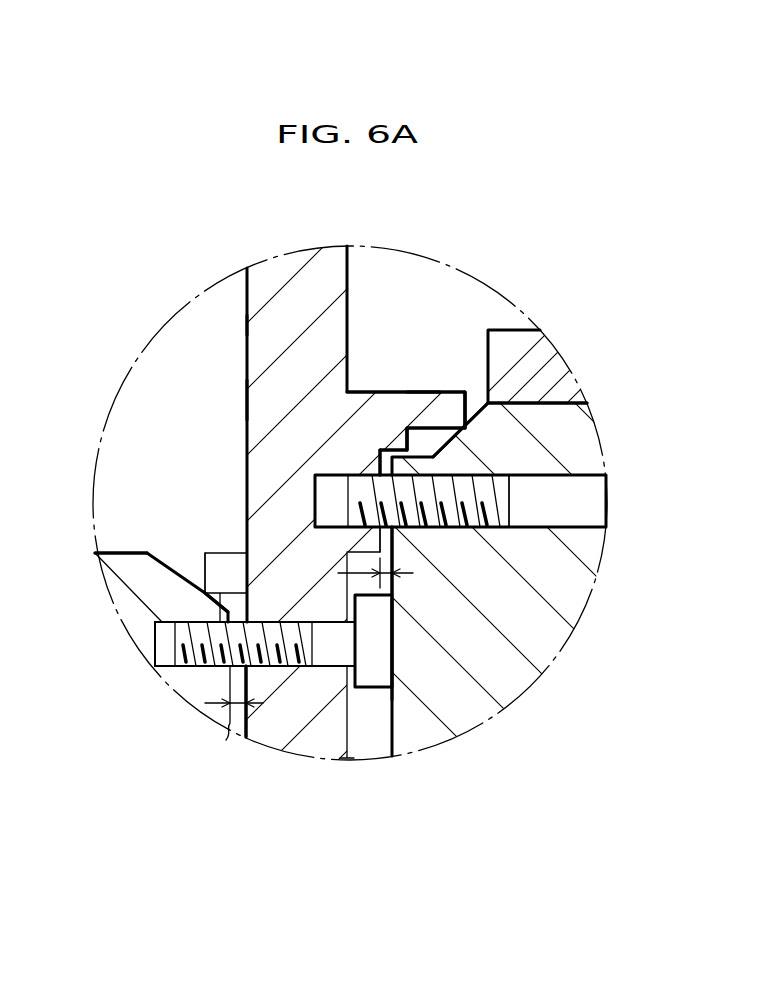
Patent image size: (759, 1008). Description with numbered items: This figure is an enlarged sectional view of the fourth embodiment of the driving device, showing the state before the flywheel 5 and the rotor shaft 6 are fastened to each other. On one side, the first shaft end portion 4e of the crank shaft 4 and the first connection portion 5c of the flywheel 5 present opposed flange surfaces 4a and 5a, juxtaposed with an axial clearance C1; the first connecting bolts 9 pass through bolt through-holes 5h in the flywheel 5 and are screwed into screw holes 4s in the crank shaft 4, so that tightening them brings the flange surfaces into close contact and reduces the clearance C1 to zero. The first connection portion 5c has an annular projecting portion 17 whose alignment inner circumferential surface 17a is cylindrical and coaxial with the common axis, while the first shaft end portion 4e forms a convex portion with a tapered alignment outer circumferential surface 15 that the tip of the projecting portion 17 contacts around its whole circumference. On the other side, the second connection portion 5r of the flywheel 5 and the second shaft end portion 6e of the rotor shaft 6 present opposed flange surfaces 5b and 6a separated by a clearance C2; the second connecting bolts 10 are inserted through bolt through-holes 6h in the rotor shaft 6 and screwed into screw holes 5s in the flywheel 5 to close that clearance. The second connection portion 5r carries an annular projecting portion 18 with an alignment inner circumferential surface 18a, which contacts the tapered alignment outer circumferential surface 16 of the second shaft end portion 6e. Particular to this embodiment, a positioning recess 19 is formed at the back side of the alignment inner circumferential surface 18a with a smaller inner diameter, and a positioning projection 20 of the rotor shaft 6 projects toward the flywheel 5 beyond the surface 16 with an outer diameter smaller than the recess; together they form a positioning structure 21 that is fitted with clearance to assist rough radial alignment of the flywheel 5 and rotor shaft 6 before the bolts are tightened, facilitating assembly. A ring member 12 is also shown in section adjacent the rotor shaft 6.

The crank shaft 4 is at (130, 607).
The flange surface 4a is at (240, 728).
The first shaft end portion 4e is at (185, 565).
The screw holes 4s is at (183, 624).
The flywheel 5 is at (294, 747).
The flange surface 5a is at (246, 400).
The flange surface 5b is at (394, 540).
The first connection portion 5c is at (188, 570).
The bolt through-holes 5h is at (320, 665).
The second connection portion 5r is at (393, 436).
The screw holes 5s is at (246, 323).
The rotor shaft 6 is at (548, 635).
The flange surface 6a is at (392, 745).
The second shaft end portion 6e is at (452, 420).
The bolt through-holes 6h is at (547, 512).
The first connecting bolts 9 is at (394, 644).
The second connecting bolts 10 is at (567, 473).
The ring member 12 is at (533, 330).
The alignment outer circumferential surface 15 is at (172, 560).
The alignment outer circumferential surface 16 is at (480, 405).
The annular projecting portion 17 is at (203, 536).
The alignment inner circumferential surface 17a is at (198, 668).
The annular projecting portion 18 is at (455, 427).
The alignment inner circumferential surface 18a is at (422, 388).
The positioning recess 19 is at (372, 475).
The positioning projection 20 is at (420, 452).
The positioning structure 21 is at (372, 455).
The clearance C1 is at (254, 703).
The clearance C2 is at (358, 574).